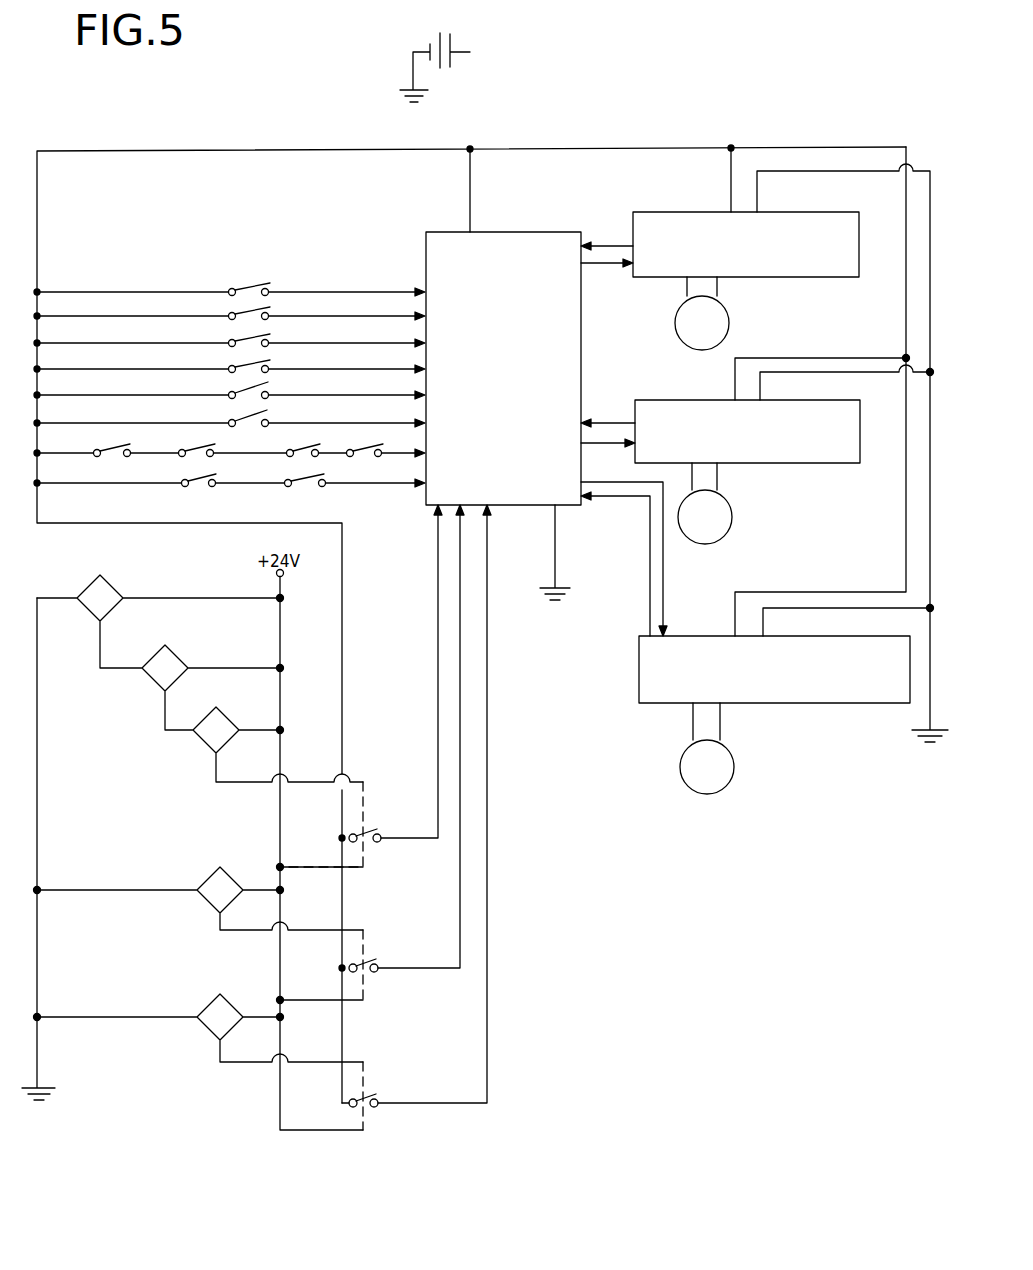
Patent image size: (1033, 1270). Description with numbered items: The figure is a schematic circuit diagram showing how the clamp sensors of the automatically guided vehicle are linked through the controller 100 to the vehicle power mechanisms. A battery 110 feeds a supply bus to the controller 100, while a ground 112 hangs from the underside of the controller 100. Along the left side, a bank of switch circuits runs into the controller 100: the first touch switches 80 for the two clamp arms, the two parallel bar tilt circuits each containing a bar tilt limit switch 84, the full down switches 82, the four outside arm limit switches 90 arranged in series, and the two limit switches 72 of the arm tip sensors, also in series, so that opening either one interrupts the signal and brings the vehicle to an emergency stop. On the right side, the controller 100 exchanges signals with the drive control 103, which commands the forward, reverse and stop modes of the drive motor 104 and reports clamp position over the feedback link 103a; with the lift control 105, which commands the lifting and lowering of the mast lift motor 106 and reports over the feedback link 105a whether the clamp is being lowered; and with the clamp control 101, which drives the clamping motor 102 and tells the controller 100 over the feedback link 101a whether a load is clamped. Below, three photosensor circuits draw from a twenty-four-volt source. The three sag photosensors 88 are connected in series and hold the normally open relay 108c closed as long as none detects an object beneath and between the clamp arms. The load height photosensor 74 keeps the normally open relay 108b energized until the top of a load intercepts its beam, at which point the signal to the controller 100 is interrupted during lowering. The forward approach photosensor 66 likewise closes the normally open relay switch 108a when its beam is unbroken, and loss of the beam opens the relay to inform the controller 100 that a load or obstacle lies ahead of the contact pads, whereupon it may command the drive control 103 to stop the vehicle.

The battery 110 is at (455, 38).
The controller 100 is at (513, 506).
The controller ground 112 is at (555, 567).
The first touch switches 80 is at (244, 313).
The bar tilt limit switch 84 is at (238, 367).
The full down switches 82 is at (240, 421).
The outside arm limit switches 90 is at (197, 447).
The limit switches 72 is at (294, 478).
The drive control 103 is at (672, 212).
The feedback link 103a is at (607, 241).
The drive motor 104 is at (675, 324).
The lift control 105 is at (672, 400).
The feedback link 105a is at (617, 420).
The mast lift motor 106 is at (733, 521).
The clamp control 101 is at (639, 668).
The feedback link 101a is at (650, 592).
The clamping motor 102 is at (735, 765).
The sag photosensors 88 is at (89, 611).
The load height photosensor 74 is at (206, 903).
The forward approach photosensor 66 is at (206, 1030).
The relay switch 108a is at (389, 1079).
The relay 108b is at (389, 945).
The relay 108c is at (376, 820).